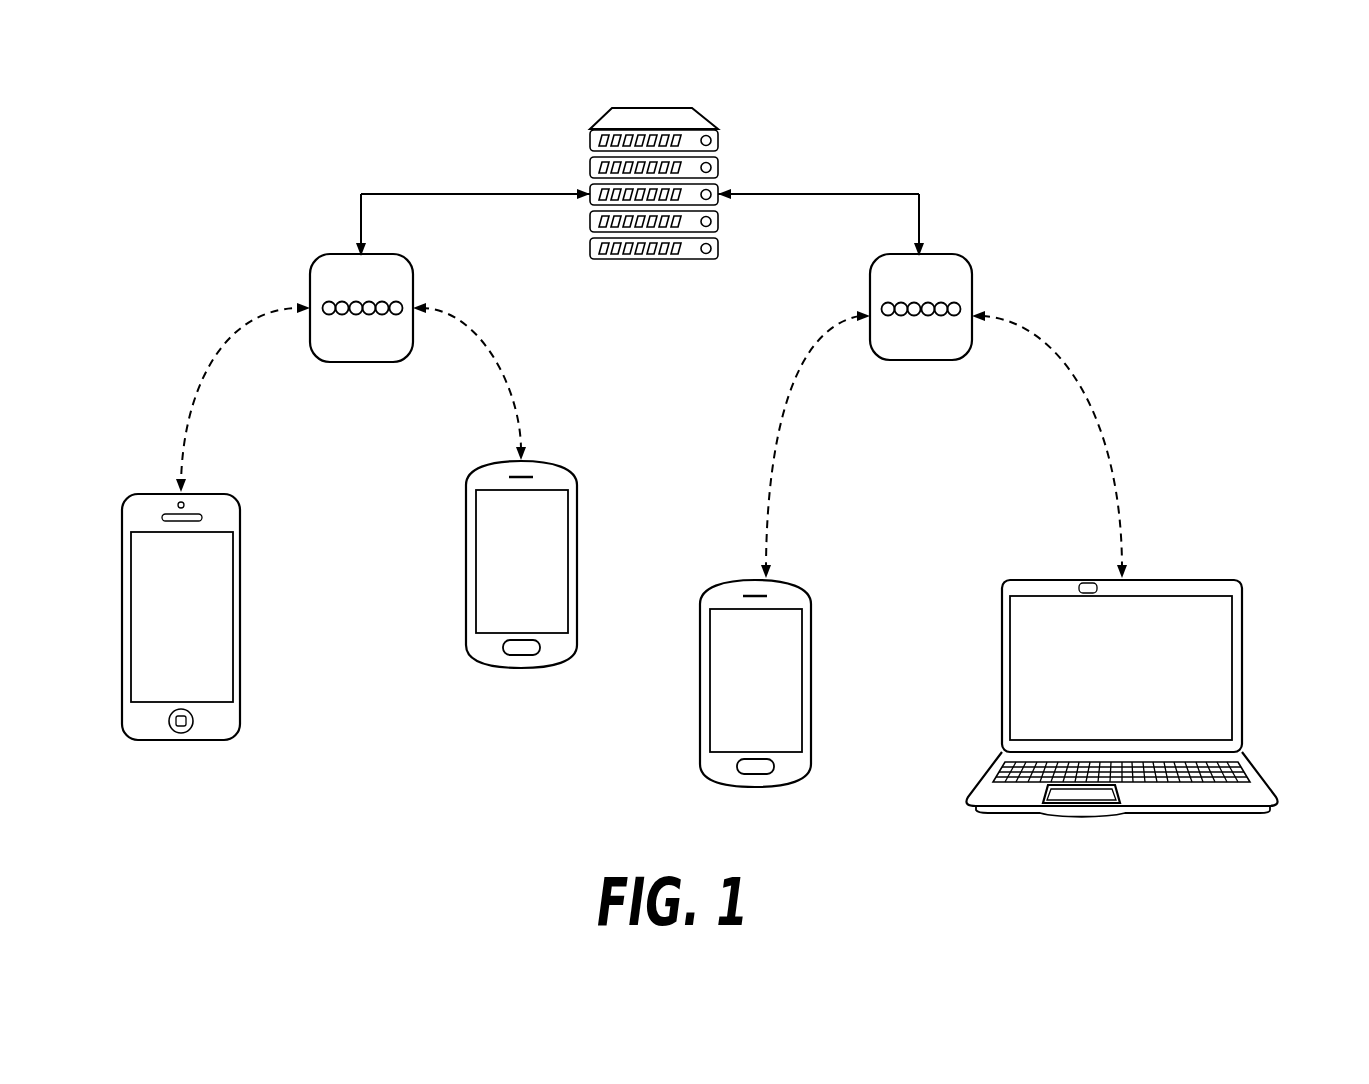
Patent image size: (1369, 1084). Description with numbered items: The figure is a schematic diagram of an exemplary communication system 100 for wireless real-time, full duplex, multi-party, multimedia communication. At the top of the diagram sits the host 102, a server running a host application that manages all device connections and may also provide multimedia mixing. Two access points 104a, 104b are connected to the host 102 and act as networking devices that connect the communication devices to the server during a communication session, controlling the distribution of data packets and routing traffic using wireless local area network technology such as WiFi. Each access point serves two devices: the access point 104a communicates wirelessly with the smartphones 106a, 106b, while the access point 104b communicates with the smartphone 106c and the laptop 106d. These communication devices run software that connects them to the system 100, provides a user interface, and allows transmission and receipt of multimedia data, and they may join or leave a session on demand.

The system 100 is at (276, 141).
The host 102 is at (700, 118).
The access point 104a is at (310, 258).
The access point 104b is at (940, 254).
The communication device 106a is at (122, 591).
The communication device 106b is at (467, 598).
The communication device 106c is at (700, 692).
The communication device 106d is at (1242, 677).